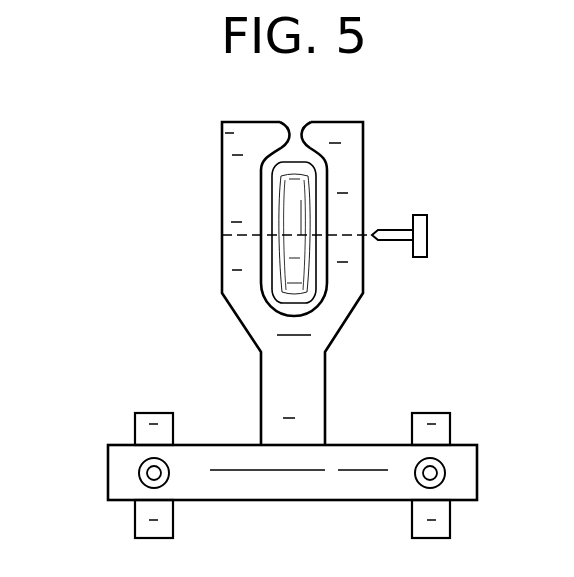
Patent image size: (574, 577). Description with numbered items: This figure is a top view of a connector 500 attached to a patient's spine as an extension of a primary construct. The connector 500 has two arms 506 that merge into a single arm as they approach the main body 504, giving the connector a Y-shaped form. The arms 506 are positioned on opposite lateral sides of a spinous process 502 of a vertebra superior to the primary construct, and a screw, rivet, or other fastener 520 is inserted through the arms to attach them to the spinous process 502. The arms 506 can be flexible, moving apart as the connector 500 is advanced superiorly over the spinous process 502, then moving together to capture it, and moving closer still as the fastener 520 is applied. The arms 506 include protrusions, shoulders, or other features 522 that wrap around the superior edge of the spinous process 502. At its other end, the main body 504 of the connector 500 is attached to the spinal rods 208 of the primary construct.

The connector 500 is at (157, 161).
The spinous process 502 is at (288, 210).
The main body 504 is at (224, 448).
The arms 506 is at (222, 130).
The fastener 520 is at (428, 223).
The features 522 is at (313, 130).
The spinal rods 208 is at (140, 522).